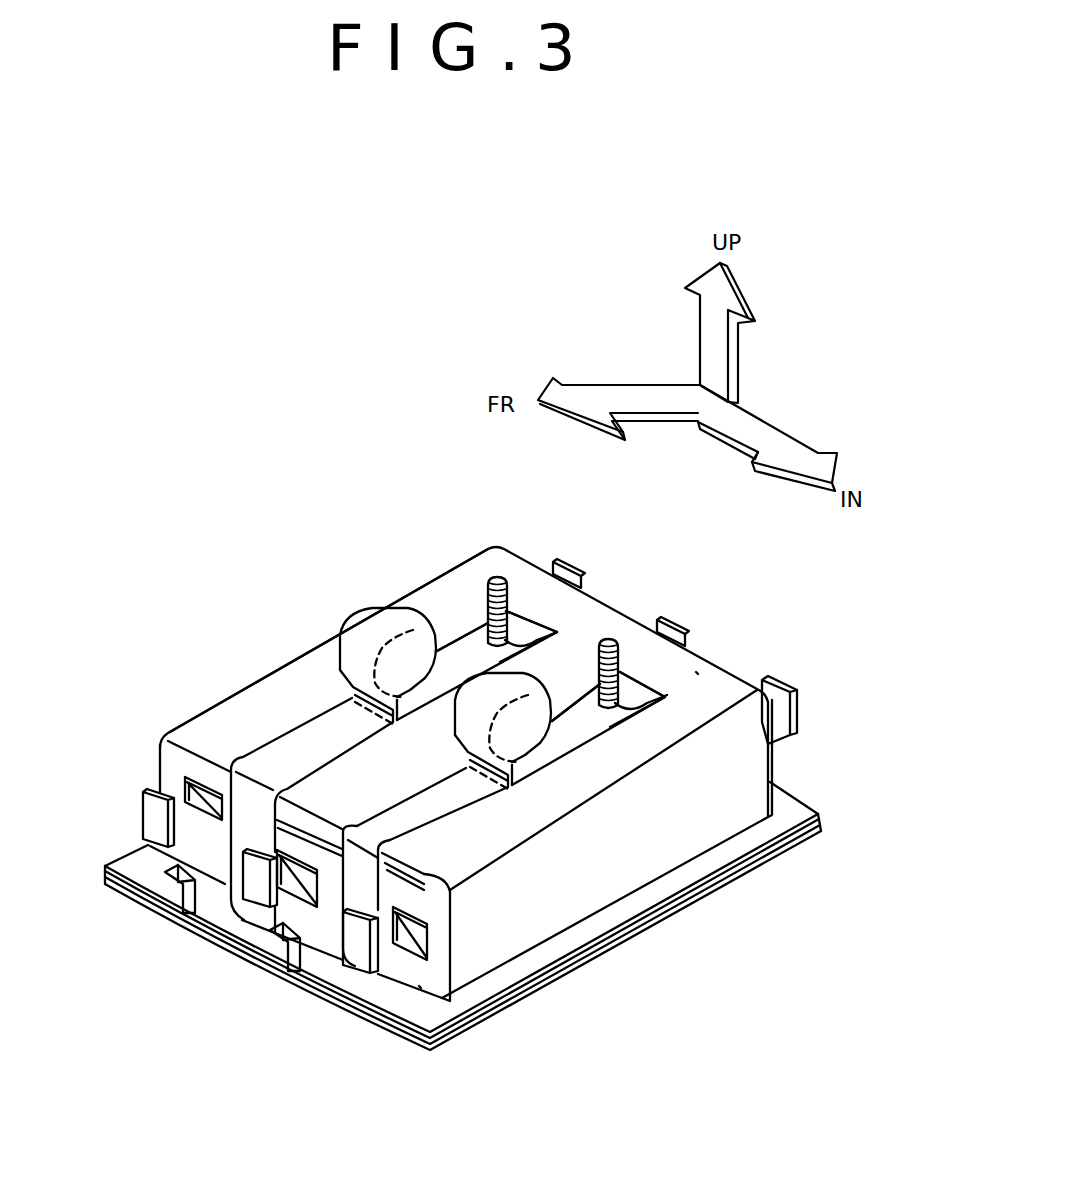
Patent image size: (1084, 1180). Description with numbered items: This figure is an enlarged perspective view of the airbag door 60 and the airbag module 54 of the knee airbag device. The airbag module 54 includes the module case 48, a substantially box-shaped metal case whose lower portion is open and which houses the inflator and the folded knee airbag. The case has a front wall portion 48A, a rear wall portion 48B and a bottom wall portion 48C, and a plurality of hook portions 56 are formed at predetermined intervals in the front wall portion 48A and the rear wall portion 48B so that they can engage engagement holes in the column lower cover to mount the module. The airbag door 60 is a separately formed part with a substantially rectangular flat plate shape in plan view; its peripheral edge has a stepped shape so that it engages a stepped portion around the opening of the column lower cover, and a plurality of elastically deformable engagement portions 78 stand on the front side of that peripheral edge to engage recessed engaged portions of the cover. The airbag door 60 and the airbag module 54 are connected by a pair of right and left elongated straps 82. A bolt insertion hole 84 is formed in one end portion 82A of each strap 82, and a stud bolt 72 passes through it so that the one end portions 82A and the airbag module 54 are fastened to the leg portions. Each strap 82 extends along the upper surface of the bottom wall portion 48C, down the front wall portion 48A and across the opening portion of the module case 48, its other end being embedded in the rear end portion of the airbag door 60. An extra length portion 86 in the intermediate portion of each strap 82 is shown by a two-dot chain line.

The module case 48 is at (728, 671).
The front wall portion 48A is at (420, 987).
The rear wall portion 48B is at (770, 777).
The bottom wall portion 48C is at (697, 673).
The airbag module 54 is at (405, 567).
The hook portions 56 is at (788, 685).
The airbag door 60 is at (518, 1025).
The stud bolt 72 is at (493, 575).
The engagement portions 78 is at (137, 892).
The straps 82 is at (283, 722).
The one end portion 82A is at (523, 620).
The bolt insertion hole 84 is at (549, 645).
The extra length portion 86 is at (355, 610).